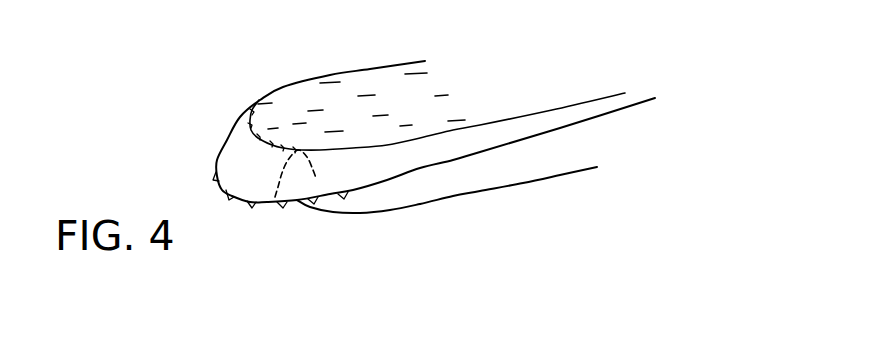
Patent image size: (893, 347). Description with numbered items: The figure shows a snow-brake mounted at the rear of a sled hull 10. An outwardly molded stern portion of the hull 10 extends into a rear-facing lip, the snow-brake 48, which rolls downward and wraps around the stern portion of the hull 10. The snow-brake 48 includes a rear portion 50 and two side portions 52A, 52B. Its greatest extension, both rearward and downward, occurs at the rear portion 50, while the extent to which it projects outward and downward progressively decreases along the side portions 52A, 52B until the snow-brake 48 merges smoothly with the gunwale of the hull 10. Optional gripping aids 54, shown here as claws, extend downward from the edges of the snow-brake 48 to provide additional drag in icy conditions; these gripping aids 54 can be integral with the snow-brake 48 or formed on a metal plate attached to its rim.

The hull 10 is at (522, 173).
The snow-brake 48 is at (238, 221).
The rear portion 50 is at (227, 160).
The side portion 52A is at (377, 177).
The side portion 52B is at (262, 98).
The gripping aids 54 is at (282, 203).